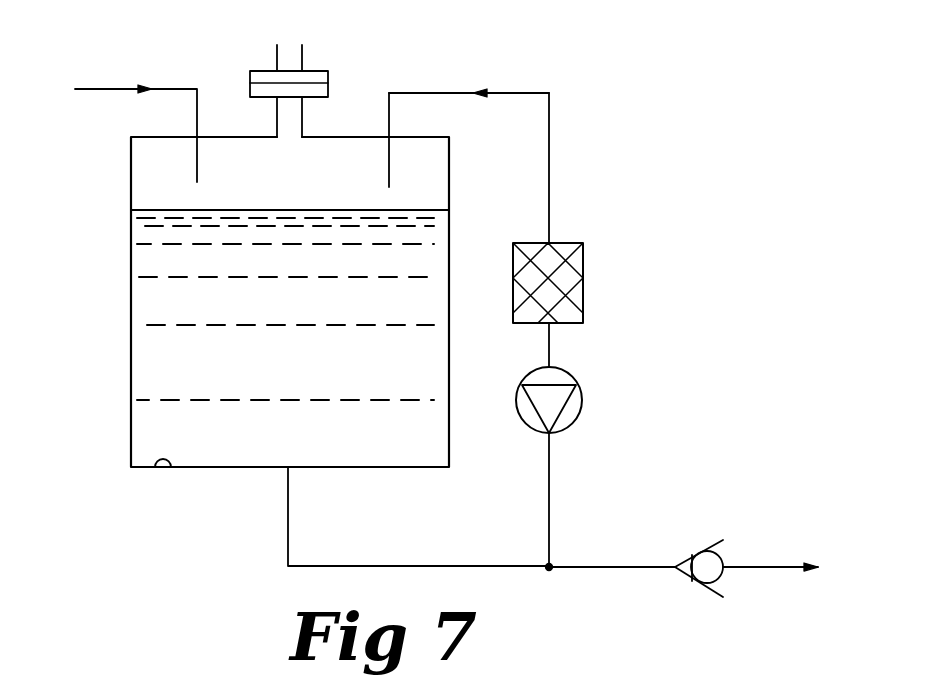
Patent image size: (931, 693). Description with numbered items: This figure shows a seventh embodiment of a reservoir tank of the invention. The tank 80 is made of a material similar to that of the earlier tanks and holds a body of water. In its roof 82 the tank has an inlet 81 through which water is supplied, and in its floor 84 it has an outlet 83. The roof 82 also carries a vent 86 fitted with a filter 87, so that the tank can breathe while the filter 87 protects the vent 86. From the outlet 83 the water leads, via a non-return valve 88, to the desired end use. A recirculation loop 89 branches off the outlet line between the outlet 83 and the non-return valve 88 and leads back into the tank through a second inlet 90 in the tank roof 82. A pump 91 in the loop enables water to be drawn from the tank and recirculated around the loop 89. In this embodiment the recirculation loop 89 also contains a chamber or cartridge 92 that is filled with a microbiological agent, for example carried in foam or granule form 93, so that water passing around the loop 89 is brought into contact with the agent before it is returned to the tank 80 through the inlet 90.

The tank 80 is at (120, 382).
The inlet 81 is at (199, 137).
The roof 82 is at (368, 138).
The outlet 83 is at (287, 472).
The floor 84 is at (151, 468).
The vent 86 is at (305, 123).
The filter 87 is at (315, 70).
The non-return valve 88 is at (720, 580).
The recirculation loop 89 is at (549, 153).
The inlet 90 is at (392, 138).
The pump 91 is at (582, 403).
The chamber or cartridge 92 is at (583, 298).
The microbiological agent in foam or granule carrier form 93 is at (553, 278).